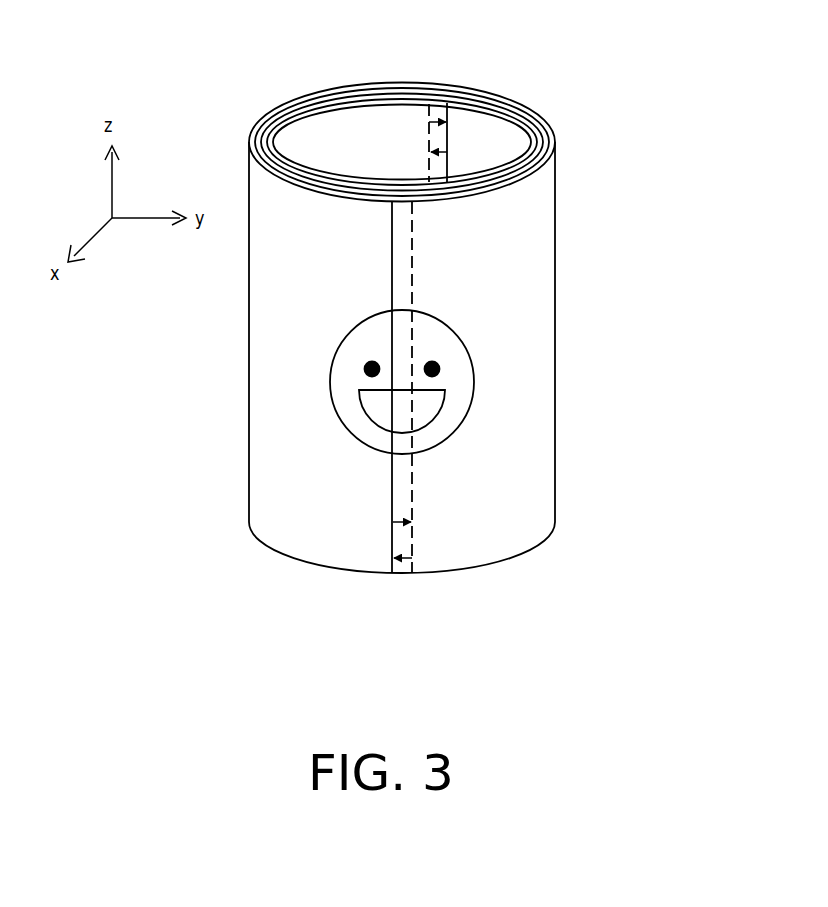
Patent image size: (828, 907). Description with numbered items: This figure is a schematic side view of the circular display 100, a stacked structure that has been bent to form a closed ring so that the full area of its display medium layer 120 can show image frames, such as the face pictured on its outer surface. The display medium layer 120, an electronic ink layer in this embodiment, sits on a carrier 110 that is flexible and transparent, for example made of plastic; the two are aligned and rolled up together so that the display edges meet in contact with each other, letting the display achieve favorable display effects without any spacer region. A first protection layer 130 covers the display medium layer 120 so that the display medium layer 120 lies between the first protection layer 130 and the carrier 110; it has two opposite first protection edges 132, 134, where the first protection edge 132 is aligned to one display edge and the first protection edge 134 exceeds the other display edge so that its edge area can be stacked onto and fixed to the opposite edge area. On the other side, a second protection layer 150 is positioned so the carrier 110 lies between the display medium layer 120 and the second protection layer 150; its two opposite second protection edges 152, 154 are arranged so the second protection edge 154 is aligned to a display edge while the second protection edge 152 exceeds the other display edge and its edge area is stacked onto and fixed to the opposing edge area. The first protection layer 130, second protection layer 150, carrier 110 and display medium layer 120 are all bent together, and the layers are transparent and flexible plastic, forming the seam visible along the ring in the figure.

The circular display 100 is at (657, 650).
The carrier 110 is at (528, 106).
The display medium layer 120 is at (518, 103).
The first protection layer 130 is at (497, 96).
The first protection edge 132 is at (392, 525).
The first protection edge 134 is at (396, 564).
The second protection layer 150 is at (548, 128).
The second protection edge 152 is at (440, 119).
The second protection edge 154 is at (440, 150).